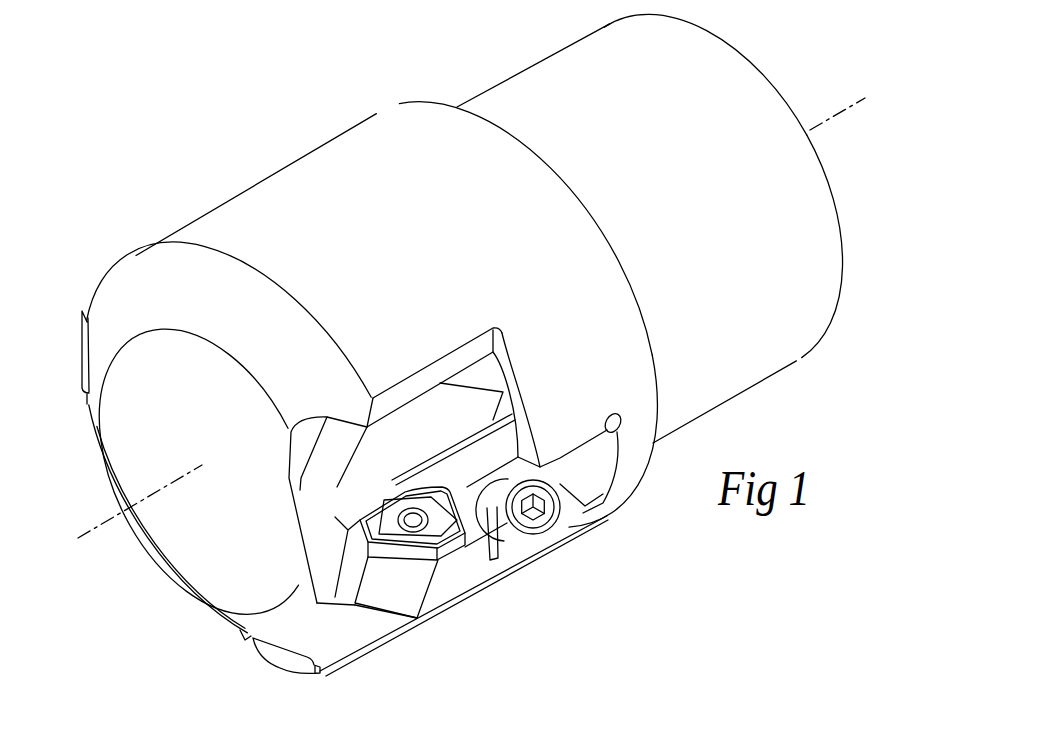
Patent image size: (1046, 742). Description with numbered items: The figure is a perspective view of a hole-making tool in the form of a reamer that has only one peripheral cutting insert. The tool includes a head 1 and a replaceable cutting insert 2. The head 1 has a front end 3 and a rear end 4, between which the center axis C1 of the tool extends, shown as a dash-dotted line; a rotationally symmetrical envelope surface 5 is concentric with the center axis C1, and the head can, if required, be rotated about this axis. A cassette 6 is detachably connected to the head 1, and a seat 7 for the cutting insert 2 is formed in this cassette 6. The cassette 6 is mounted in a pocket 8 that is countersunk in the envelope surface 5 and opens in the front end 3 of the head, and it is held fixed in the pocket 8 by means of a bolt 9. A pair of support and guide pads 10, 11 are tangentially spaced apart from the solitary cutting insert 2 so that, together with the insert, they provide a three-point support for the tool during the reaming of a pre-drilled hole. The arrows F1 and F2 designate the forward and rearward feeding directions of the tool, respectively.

The head 1 is at (224, 179).
The cutting insert 2 is at (464, 574).
The front end 3 is at (212, 557).
The rear end 4 is at (773, 87).
The envelope surface 5 is at (590, 337).
The cassette 6 is at (412, 630).
The seat 7 is at (443, 486).
The pocket 8 is at (318, 549).
The bolt 9 is at (552, 516).
The support and guide pad 10 is at (83, 340).
The support and guide pad 11 is at (283, 657).
The center axis C1 is at (92, 531).
The forward feeding direction F1 is at (425, 262).
The rearward feeding direction F2 is at (513, 259).